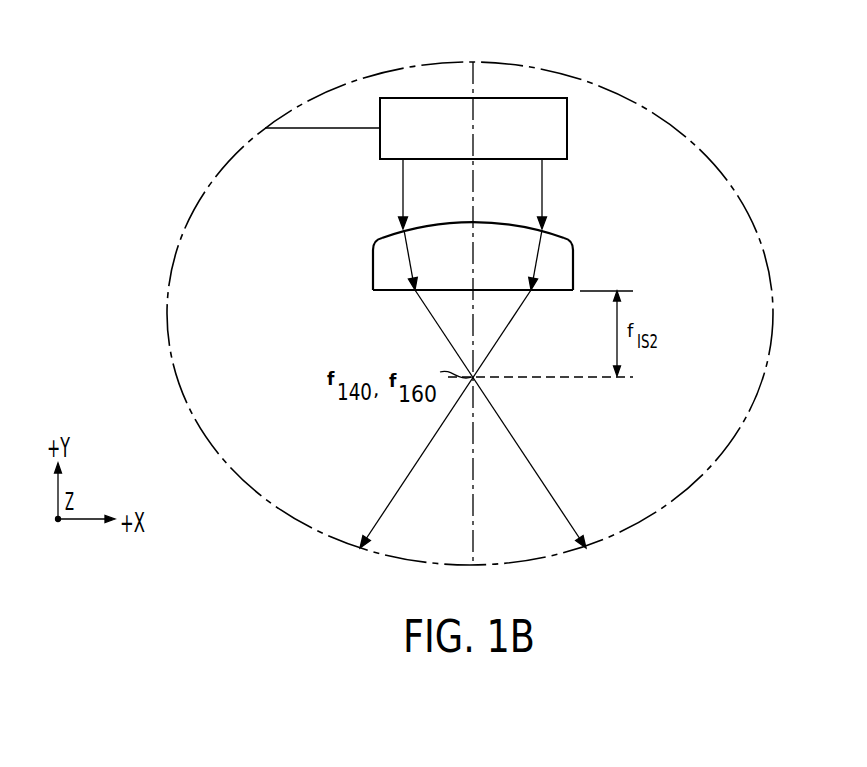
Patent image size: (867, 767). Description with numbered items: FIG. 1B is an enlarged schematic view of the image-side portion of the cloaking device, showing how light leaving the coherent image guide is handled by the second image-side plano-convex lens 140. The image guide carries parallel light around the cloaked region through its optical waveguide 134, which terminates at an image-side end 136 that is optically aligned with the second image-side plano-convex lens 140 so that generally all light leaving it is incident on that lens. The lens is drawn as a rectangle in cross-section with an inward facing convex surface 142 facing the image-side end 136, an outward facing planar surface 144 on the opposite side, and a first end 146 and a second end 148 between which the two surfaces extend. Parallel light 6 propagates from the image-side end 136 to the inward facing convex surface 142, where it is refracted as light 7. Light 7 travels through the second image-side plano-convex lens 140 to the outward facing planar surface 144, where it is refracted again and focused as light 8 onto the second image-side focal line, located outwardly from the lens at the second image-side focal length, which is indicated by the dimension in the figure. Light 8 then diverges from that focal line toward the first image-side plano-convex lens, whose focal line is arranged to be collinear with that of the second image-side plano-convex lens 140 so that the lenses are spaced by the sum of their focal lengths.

The optical waveguide 134 is at (293, 128).
The image-side end 136 is at (567, 127).
The parallel light 6 is at (403, 193).
The light 7 is at (408, 242).
The light 8 is at (440, 328).
The second image-side plano-convex lens 140 is at (488, 262).
The inward facing convex surface 142 is at (562, 232).
The outward facing planar surface 144 is at (547, 293).
The first end 146 is at (575, 278).
The second end 148 is at (373, 270).